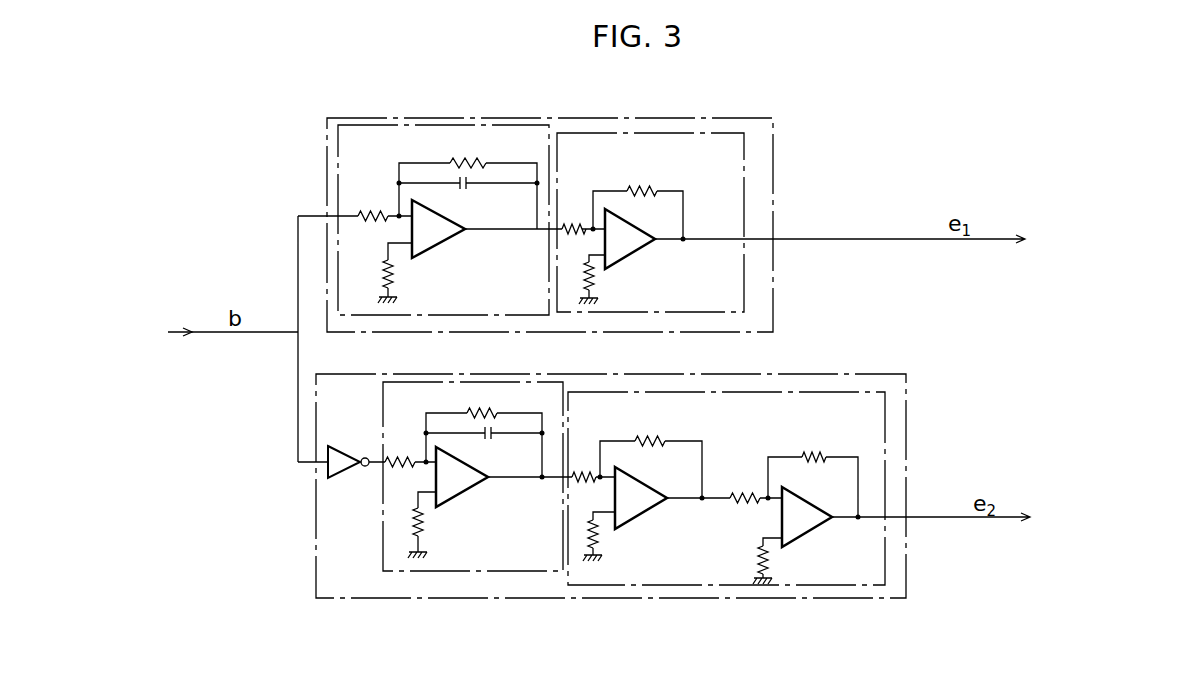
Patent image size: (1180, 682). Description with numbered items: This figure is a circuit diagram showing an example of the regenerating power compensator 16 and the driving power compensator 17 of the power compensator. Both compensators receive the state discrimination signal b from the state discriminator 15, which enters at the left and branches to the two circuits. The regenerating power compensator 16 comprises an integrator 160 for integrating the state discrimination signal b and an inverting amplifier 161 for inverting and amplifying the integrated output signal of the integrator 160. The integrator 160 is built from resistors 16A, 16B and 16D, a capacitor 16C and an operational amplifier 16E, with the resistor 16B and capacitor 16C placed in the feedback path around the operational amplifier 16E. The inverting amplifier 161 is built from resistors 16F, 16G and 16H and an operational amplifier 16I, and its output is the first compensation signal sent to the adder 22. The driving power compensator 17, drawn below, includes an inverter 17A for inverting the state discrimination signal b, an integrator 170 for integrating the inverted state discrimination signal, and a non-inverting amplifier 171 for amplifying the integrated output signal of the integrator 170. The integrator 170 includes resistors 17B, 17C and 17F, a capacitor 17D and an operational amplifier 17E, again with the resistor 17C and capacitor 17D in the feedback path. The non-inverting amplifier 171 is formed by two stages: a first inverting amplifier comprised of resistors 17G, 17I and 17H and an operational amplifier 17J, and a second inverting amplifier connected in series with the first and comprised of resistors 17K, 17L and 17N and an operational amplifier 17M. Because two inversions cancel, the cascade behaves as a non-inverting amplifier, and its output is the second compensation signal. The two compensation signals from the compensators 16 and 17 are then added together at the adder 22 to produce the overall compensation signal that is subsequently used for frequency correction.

The state discriminator 15 is at (94, 332).
The regenerating power compensator 16 is at (776, 134).
The integrator 160 is at (490, 316).
The inverting amplifier 161 is at (745, 298).
The resistor 16A is at (367, 210).
The resistor 16B is at (452, 160).
The capacitor 16C is at (472, 188).
The resistor 16D is at (395, 275).
The operational amplifier 16E is at (445, 246).
The resistor 16F is at (572, 223).
The resistor 16G is at (640, 188).
The resistor 16H is at (598, 278).
The operational amplifier 16I is at (648, 250).
The driving power compensator 17 is at (908, 386).
The integrator 170 is at (467, 572).
The non-inverting amplifier 171 is at (675, 585).
The inverter 17A is at (336, 446).
The resistor 17B is at (392, 468).
The resistor 17C is at (468, 410).
The capacitor 17D is at (490, 440).
The operational amplifier 17E is at (470, 490).
The resistor 17F is at (426, 524).
The resistor 17G is at (584, 470).
The resistor 17H is at (600, 540).
The resistor 17I is at (648, 440).
The operational amplifier 17J is at (642, 515).
The resistor 17K is at (738, 504).
The resistor 17L is at (812, 455).
The operational amplifier 17M is at (805, 538).
The resistor 17N is at (770, 562).
The adder 22 is at (916, 382).